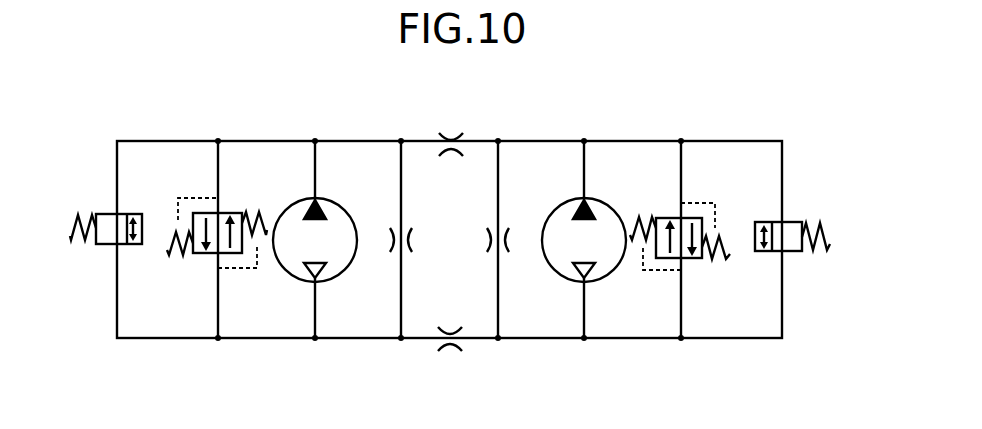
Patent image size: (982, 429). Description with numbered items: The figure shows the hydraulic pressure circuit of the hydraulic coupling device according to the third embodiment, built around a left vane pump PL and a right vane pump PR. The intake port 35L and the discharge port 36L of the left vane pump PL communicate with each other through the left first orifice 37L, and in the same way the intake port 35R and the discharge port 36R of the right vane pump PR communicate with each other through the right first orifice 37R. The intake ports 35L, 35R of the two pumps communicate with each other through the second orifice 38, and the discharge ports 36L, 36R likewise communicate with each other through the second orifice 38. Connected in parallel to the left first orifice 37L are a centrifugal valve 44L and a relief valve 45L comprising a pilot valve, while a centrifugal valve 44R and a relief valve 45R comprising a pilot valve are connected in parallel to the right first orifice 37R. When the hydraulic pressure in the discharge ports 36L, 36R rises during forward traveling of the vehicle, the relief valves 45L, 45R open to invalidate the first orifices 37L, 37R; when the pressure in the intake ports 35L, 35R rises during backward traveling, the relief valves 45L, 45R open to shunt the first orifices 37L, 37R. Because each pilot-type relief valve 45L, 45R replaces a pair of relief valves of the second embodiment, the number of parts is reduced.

The intake port 35L is at (301, 244).
The intake port 35R is at (600, 244).
The discharge port 36L is at (286, 190).
The discharge port 36R is at (585, 200).
The left first orifice 37L is at (392, 243).
The right first orifice 37R is at (506, 243).
The second orifice 38 is at (451, 136).
The centrifugal valve 44L is at (111, 245).
The centrifugal valve 44R is at (796, 253).
The relief valve 45L is at (213, 254).
The relief valve 45R is at (686, 259).
The left vane pump PL is at (316, 243).
The right vane pump PR is at (583, 243).